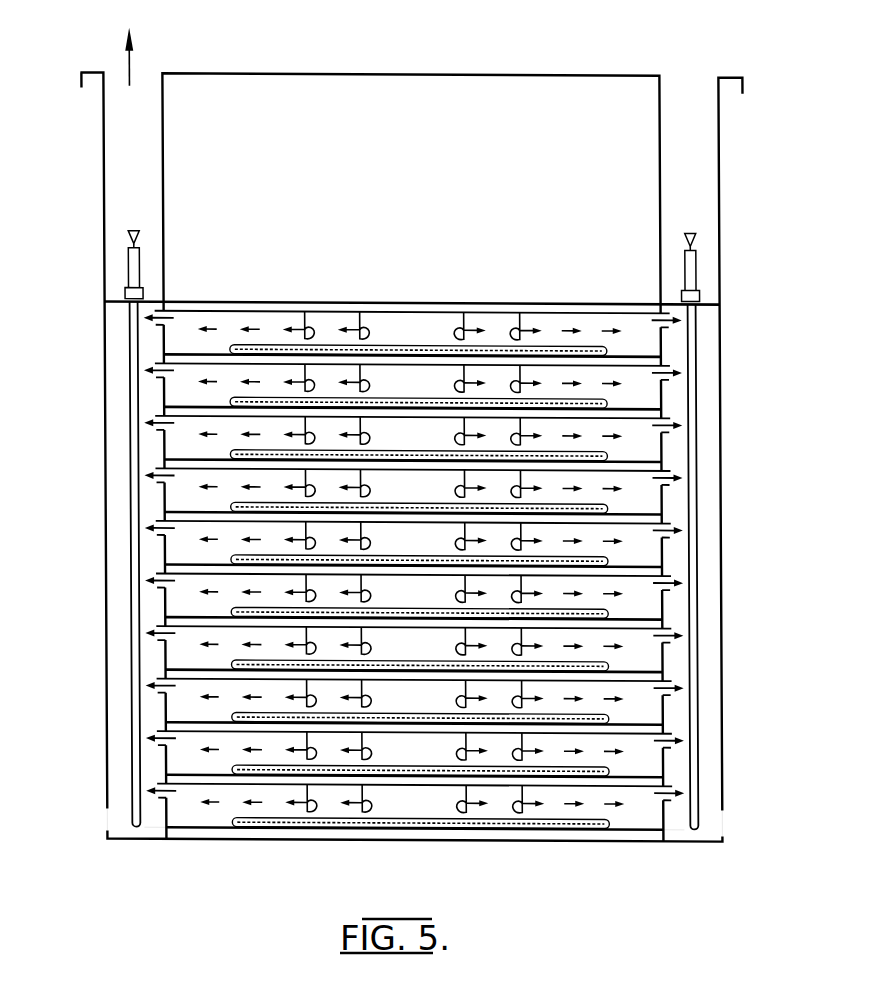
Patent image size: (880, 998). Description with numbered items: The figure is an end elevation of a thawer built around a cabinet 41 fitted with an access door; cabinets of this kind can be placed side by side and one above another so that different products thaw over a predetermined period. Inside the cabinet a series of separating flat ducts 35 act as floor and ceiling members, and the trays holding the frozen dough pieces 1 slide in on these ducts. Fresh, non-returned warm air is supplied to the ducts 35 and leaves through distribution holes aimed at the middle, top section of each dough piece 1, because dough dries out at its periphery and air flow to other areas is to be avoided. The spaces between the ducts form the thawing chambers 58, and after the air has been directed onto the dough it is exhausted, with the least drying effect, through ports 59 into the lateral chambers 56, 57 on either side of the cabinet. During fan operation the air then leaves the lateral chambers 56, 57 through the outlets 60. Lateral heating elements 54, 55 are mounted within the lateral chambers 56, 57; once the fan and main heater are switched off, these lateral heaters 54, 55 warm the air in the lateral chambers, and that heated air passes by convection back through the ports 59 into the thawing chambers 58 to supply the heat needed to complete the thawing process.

The dough piece 1 is at (483, 347).
The separating flat duct 35 is at (170, 632).
The cabinet 41 is at (508, 72).
The lateral heating element 54 is at (690, 359).
The lateral heating element 55 is at (130, 345).
The lateral chamber 56 is at (671, 812).
The lateral chamber 57 is at (147, 812).
The thawing chamber 58 is at (325, 320).
The port 59 is at (150, 512).
The outlet 60 is at (102, 816).